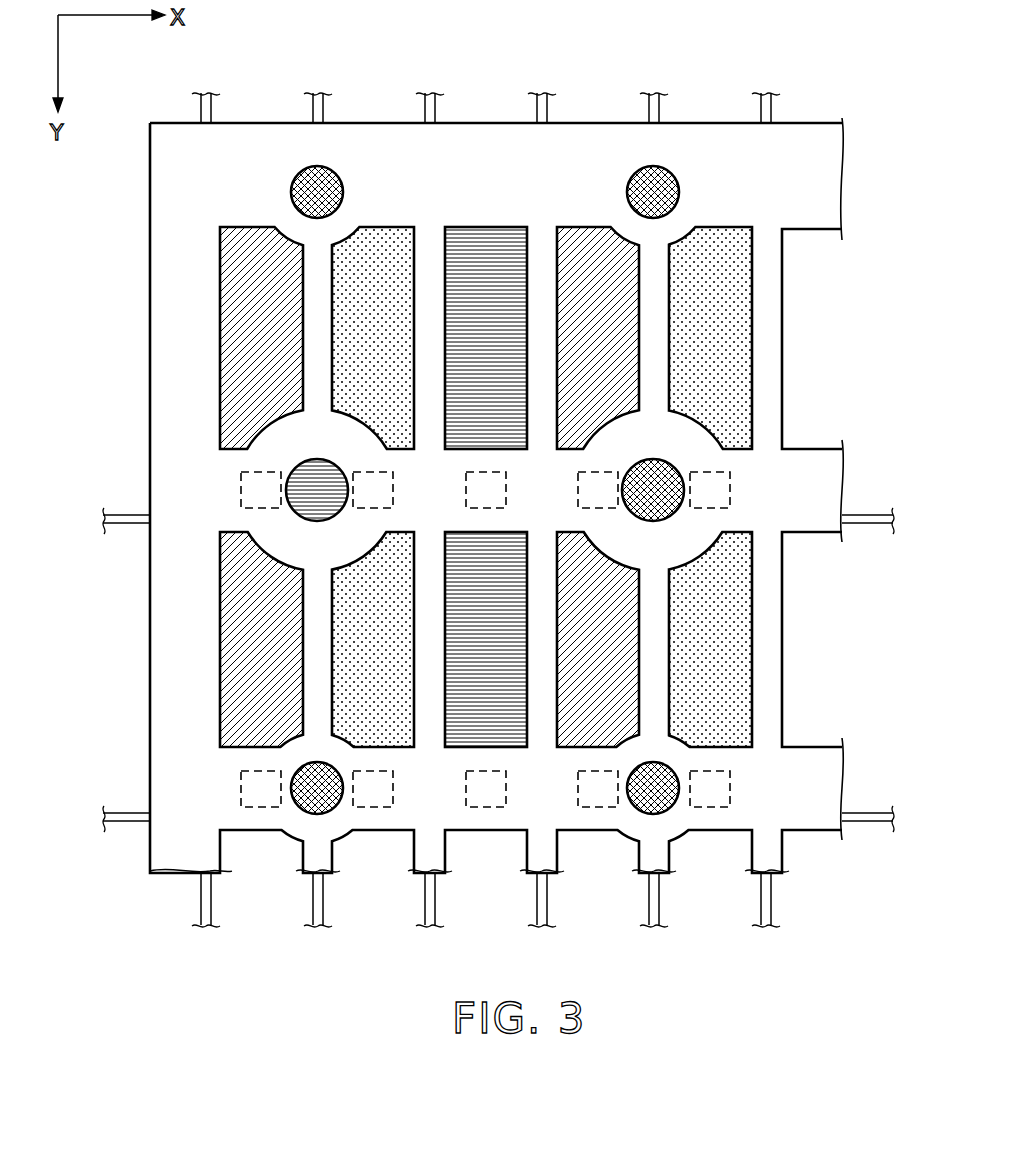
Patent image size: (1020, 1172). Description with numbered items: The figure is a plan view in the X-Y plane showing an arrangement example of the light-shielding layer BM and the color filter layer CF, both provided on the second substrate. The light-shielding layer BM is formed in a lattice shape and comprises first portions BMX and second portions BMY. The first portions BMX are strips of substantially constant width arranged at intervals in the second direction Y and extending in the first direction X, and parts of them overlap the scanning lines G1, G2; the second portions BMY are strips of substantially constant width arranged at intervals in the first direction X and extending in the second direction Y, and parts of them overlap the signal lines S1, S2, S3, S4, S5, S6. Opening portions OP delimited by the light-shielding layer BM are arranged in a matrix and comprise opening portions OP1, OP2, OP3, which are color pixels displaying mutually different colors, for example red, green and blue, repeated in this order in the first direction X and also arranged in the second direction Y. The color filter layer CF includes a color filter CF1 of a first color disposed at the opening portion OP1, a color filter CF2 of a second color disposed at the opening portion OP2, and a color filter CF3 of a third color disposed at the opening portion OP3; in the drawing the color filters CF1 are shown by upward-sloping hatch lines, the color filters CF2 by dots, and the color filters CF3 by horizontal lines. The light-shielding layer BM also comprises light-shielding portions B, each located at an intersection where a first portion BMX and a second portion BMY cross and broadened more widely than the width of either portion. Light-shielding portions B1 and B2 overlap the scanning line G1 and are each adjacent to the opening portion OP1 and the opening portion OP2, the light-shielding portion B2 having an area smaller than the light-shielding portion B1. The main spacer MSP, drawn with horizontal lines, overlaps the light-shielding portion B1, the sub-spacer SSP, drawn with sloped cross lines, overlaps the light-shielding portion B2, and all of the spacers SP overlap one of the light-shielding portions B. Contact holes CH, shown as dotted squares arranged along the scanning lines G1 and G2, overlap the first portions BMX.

The light-shielding layer BM is at (808, 120).
The first portion BMX is at (816, 220).
The second portion BMY is at (653, 663).
The opening portion OP1 is at (238, 252).
The opening portion OP2 is at (365, 252).
The opening portion OP3 is at (465, 250).
The color filter CF1 is at (262, 247).
The color filter CF2 is at (396, 247).
The color filter CF3 is at (502, 247).
The opening portion OP is at (722, 590).
The color filter layer CF is at (722, 628).
The main spacer MSP is at (308, 478).
The sub-spacer SSP is at (660, 472).
The spacer SP is at (657, 790).
The contact hole CH is at (252, 496).
The scanning line G1 is at (876, 520).
The scanning line G2 is at (876, 820).
The signal line S1 is at (212, 908).
The signal line S2 is at (324, 908).
The signal line S3 is at (436, 908).
The signal line S4 is at (548, 908).
The signal line S5 is at (660, 908).
The signal line S6 is at (772, 908).
The light-shielding portion B1 is at (260, 558).
The light-shielding portion B2 is at (683, 541).
The light-shielding portion B is at (627, 842).